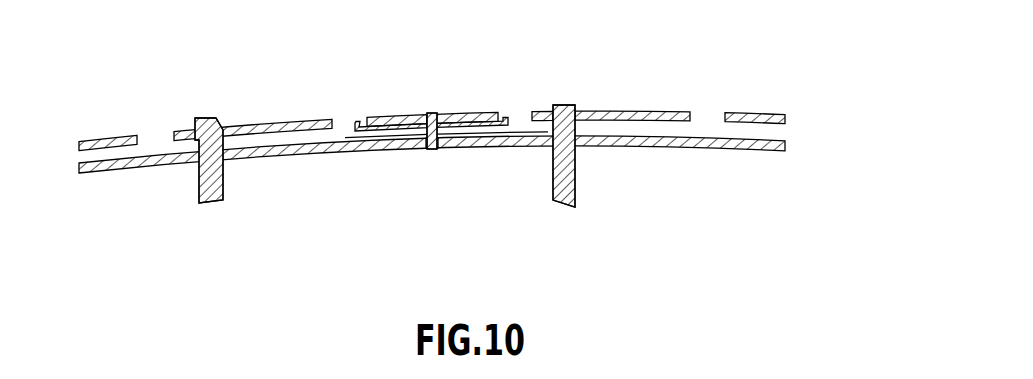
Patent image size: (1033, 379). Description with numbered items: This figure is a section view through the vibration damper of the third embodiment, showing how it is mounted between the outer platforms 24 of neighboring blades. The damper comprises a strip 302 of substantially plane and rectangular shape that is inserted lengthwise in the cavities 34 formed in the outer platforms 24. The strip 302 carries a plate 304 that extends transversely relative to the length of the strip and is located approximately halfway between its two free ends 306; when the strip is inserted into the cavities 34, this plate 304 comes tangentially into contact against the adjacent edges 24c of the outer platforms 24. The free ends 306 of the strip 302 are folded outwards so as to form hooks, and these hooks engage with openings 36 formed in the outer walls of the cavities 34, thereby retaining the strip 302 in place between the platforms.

The outer platform 24 is at (235, 172).
The adjacent edge of outer platform 24c is at (430, 148).
The cavity 34 is at (233, 133).
The opening 36 is at (337, 121).
The strip 302 is at (432, 112).
The plate 304 is at (460, 148).
The free end 306 is at (360, 123).